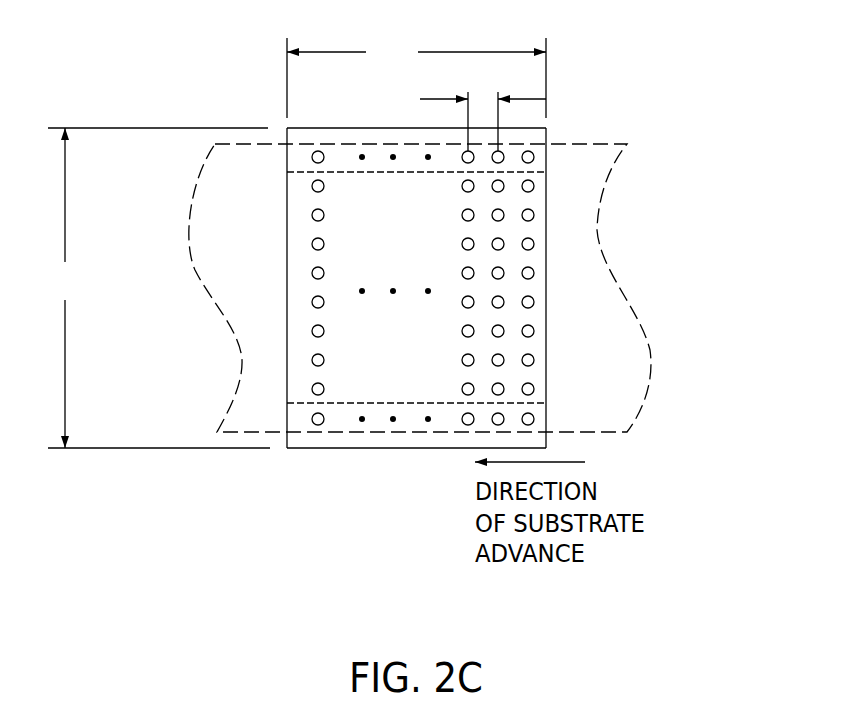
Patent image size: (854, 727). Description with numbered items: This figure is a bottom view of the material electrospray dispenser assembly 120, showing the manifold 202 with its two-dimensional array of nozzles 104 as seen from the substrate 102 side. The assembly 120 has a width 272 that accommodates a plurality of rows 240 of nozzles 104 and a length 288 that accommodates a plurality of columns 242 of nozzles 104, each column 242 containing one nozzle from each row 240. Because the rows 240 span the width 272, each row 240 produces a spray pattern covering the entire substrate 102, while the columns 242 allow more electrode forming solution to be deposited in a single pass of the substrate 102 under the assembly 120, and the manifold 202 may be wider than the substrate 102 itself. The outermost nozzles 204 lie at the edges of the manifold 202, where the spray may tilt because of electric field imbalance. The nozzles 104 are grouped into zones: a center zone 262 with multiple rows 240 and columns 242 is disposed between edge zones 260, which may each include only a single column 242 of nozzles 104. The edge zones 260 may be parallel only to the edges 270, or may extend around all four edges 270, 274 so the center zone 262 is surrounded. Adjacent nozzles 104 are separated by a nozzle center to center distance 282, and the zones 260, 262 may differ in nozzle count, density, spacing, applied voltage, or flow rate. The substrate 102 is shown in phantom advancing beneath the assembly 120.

The substrate 102 is at (250, 433).
The nozzles 104 is at (297, 273).
The material electrospray dispenser assembly 120 is at (600, 78).
The manifold 202 is at (348, 448).
The outermost nozzles 204 is at (543, 148).
The row 240 is at (303, 120).
The column 242 is at (291, 183).
The edge zone 260 is at (537, 158).
The center zone 262 is at (533, 233).
The edges 270 is at (332, 128).
The width 272 is at (156, 288).
The edges 274 is at (287, 217).
The nozzle center to center distance 282 is at (483, 102).
The length 288 is at (416, 77).